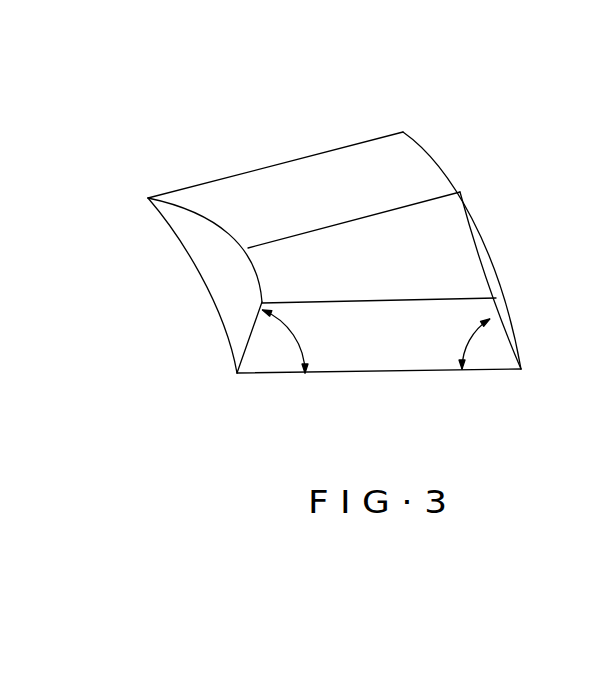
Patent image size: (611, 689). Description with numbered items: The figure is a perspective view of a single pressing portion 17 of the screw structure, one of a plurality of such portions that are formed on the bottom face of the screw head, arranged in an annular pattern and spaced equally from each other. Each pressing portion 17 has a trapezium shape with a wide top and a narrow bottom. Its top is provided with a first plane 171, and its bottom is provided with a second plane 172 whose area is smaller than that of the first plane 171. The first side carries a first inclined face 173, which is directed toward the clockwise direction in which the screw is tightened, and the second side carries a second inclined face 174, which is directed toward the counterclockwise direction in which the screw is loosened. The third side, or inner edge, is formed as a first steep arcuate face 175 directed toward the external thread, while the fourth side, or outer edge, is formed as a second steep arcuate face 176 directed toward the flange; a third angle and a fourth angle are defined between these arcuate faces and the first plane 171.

The pressing portion 17 is at (333, 277).
The first plane 171 is at (213, 303).
The second plane 172 is at (452, 248).
The first inclined face 173 is at (302, 177).
The second inclined face 174 is at (267, 403).
The first steep arcuate face 175 is at (217, 258).
The second steep arcuate face 176 is at (508, 303).